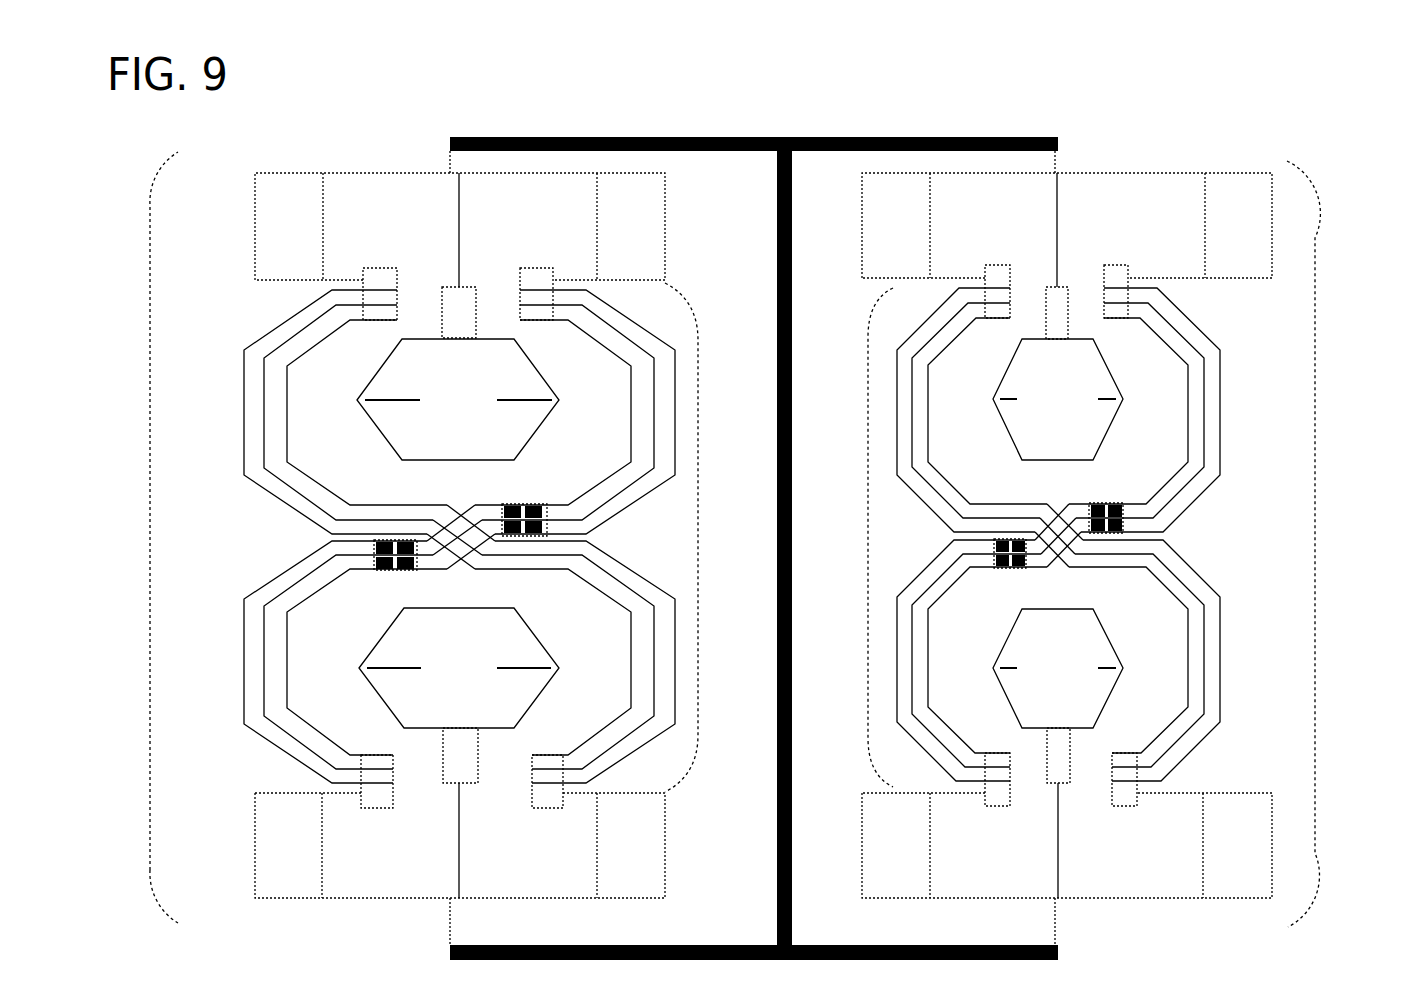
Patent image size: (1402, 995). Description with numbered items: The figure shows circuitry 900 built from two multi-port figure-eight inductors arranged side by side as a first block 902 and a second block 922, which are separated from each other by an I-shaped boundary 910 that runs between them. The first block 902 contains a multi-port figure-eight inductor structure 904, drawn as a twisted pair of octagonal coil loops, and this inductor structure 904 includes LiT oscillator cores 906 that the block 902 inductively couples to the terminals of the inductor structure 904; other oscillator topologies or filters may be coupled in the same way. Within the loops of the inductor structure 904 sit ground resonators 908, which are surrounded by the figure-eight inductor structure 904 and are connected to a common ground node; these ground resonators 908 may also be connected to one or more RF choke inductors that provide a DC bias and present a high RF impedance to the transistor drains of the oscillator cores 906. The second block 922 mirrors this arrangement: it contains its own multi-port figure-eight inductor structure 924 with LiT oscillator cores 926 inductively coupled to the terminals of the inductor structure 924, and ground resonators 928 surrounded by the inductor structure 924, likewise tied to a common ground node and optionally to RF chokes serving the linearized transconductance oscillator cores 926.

The circuitry 900 is at (1194, 88).
The first block 902 is at (150, 547).
The multi-port figure-8 inductor structure 904 is at (700, 542).
The LiT oscillator cores 906 is at (357, 173).
The ground resonators 908 is at (458, 535).
The I-shaped boundary 910 is at (658, 136).
The second block 922 is at (1316, 547).
The multi-port figure-8 inductor structure 924 is at (868, 533).
The LiT oscillator cores 926 is at (1138, 172).
The ground resonators 928 is at (1058, 535).